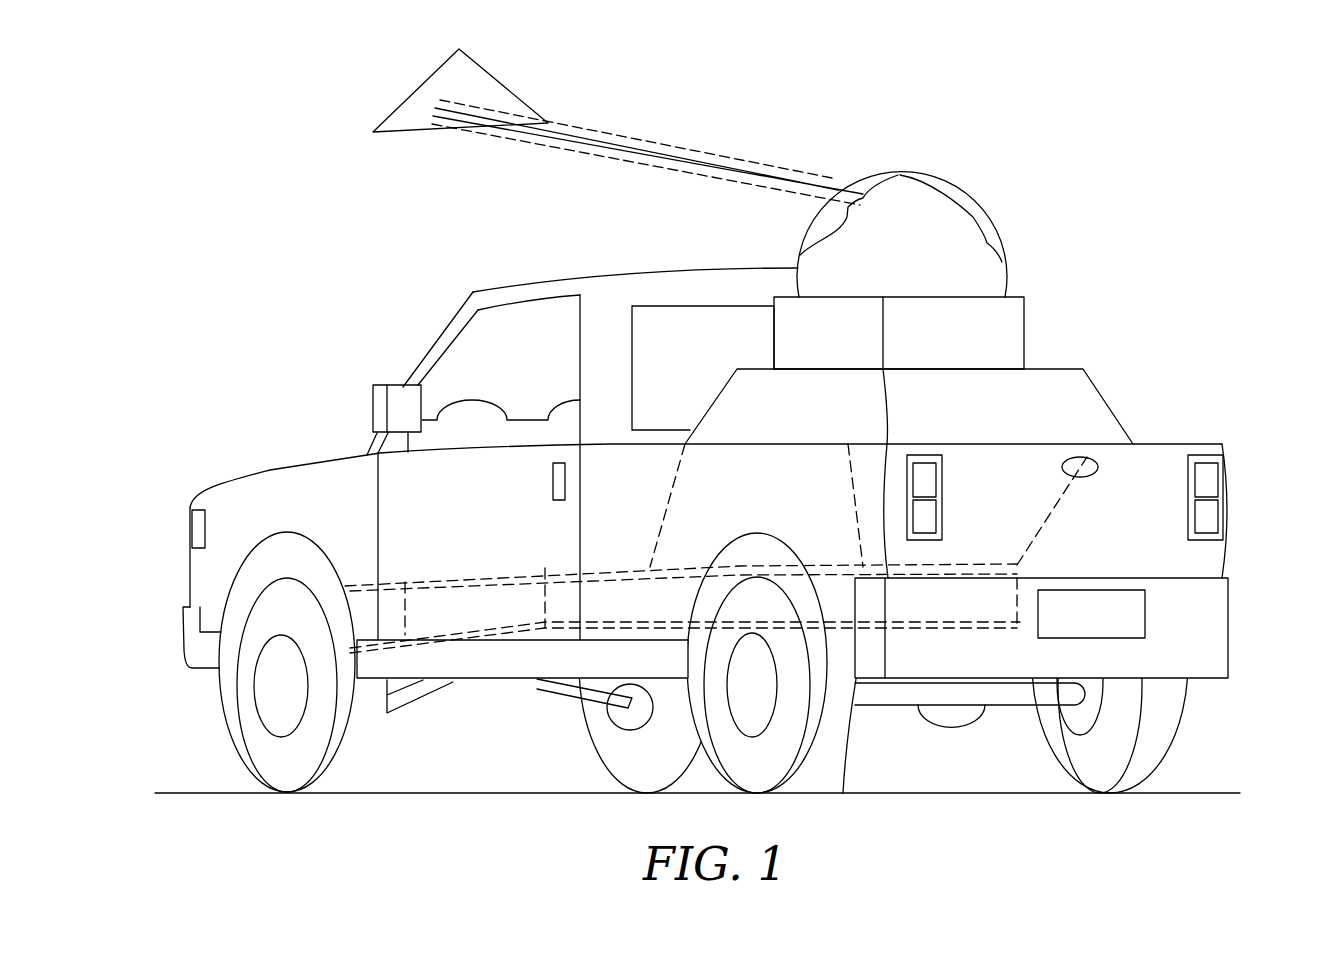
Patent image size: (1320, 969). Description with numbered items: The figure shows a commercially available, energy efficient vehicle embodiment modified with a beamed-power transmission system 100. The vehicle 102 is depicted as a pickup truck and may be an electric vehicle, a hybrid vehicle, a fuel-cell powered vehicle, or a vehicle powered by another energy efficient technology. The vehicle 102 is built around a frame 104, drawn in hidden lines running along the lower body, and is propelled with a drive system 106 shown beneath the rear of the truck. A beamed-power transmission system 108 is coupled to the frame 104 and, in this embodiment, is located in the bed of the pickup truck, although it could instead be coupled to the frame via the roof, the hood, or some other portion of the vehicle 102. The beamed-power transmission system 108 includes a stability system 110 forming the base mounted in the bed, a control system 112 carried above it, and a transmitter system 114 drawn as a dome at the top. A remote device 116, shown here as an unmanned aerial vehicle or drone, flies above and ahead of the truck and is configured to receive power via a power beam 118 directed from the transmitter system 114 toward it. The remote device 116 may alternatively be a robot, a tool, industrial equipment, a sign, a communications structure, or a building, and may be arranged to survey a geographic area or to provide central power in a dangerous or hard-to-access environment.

The beamed-power transmission system 100 is at (275, 243).
The vehicle 102 is at (190, 573).
The frame 104 is at (437, 643).
The drive system 106 is at (952, 727).
The beamed-power transmission system 108 is at (1197, 162).
The stability system 110 is at (1113, 405).
The control system 112 is at (1023, 333).
The transmitter system 114 is at (1006, 257).
The remote device 116 is at (405, 119).
The power beam 118 is at (733, 165).